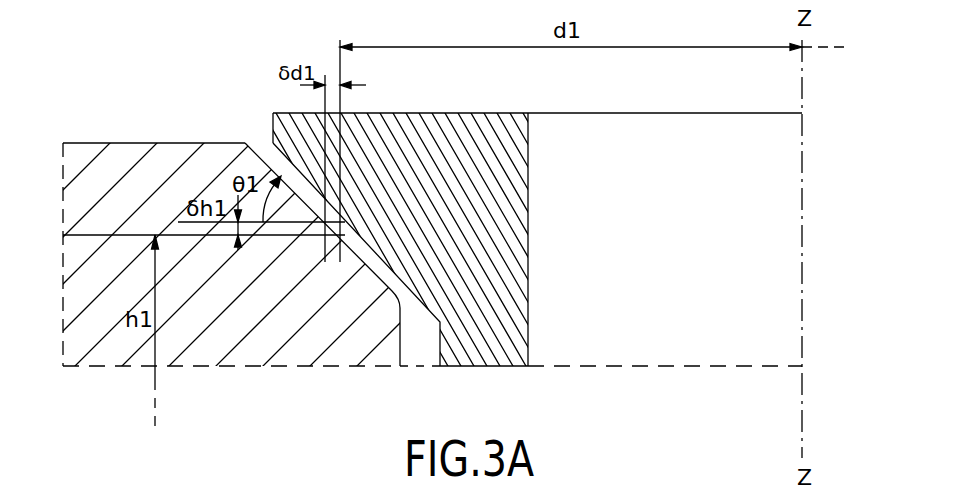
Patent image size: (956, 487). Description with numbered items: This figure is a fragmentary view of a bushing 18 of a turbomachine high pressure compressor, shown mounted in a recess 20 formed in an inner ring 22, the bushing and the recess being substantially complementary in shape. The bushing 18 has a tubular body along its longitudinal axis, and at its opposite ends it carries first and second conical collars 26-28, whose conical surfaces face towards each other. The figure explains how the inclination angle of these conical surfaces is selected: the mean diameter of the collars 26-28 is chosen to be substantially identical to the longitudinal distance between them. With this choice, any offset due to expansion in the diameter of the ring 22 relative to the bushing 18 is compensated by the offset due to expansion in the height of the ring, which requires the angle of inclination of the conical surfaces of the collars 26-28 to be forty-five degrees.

The inner ring 22 is at (113, 168).
The first and second conical collars 26-28 is at (447, 137).
The bushing 18 is at (534, 266).
The recess 20 is at (410, 353).